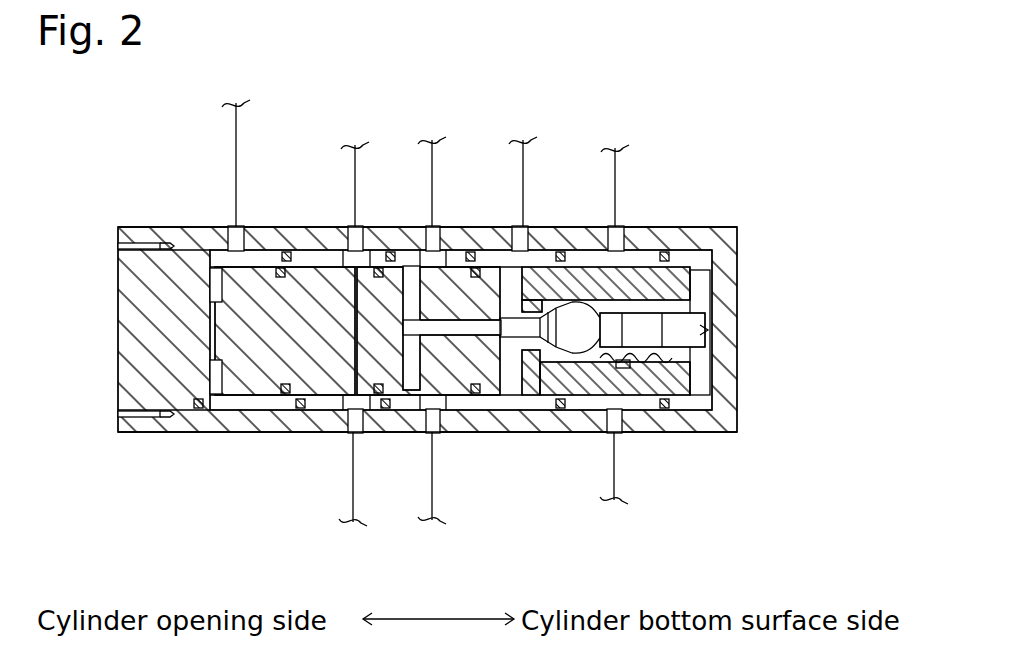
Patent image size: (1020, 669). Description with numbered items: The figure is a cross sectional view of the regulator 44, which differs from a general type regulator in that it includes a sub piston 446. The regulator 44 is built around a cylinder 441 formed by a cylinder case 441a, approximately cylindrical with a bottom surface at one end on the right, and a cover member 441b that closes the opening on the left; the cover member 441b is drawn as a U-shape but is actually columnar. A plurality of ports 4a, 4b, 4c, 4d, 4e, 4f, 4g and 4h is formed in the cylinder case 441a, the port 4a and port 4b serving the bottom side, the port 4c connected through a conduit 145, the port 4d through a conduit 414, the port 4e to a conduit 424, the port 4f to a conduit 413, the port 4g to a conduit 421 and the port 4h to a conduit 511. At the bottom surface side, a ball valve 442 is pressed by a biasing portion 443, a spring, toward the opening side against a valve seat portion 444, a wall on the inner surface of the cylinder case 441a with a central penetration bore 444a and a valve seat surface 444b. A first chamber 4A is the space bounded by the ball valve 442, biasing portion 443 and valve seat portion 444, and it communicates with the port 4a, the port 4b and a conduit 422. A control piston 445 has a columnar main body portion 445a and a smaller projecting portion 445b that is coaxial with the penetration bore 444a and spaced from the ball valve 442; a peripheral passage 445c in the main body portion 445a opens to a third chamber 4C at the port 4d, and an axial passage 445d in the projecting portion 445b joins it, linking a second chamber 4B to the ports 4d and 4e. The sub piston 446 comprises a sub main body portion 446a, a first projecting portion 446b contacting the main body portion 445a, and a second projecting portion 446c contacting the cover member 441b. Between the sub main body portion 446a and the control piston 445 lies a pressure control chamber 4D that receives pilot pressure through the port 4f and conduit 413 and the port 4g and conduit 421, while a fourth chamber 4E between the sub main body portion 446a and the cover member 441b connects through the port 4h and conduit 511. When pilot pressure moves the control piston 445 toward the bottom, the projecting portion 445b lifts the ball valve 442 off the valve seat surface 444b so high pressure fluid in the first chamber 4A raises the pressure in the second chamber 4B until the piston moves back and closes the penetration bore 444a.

The regulator 44 is at (770, 372).
The cylinder 441 is at (748, 254).
The cylinder case 441a is at (708, 228).
The cover member 441b is at (130, 278).
The ball valve 442 is at (640, 392).
The biasing portion 443 is at (712, 434).
The valve seat portion 444 is at (582, 265).
The penetration bore 444a is at (576, 415).
The valve seat surface 444b is at (688, 412).
The control piston 445 is at (402, 420).
The main body portion 445a is at (356, 437).
The projecting portion 445b is at (541, 410).
The passage 445c is at (404, 440).
The passage 445d is at (463, 405).
The sub piston 446 is at (222, 562).
The sub main body portion 446a is at (232, 430).
The first projecting portion 446b is at (290, 366).
The second projecting portion 446c is at (150, 430).
The first chamber 4A is at (662, 303).
The second chamber 4B is at (543, 244).
The third chamber 4C is at (450, 244).
The pressure control chamber 4D is at (300, 244).
The fourth chamber 4E is at (212, 262).
The port 4a is at (626, 244).
The port 4b is at (615, 499).
The port 4c is at (512, 244).
The port 4d is at (415, 244).
The port 4e is at (437, 437).
The port 4f is at (345, 244).
The port 4g is at (332, 428).
The port 4h is at (228, 244).
The conduit 413 is at (357, 168).
The conduit 414 is at (437, 166).
The conduit 421 is at (350, 508).
The conduit 422 is at (608, 478).
The conduit 424 is at (430, 505).
The conduit 511 is at (237, 141).
The conduit 145 is at (530, 162).